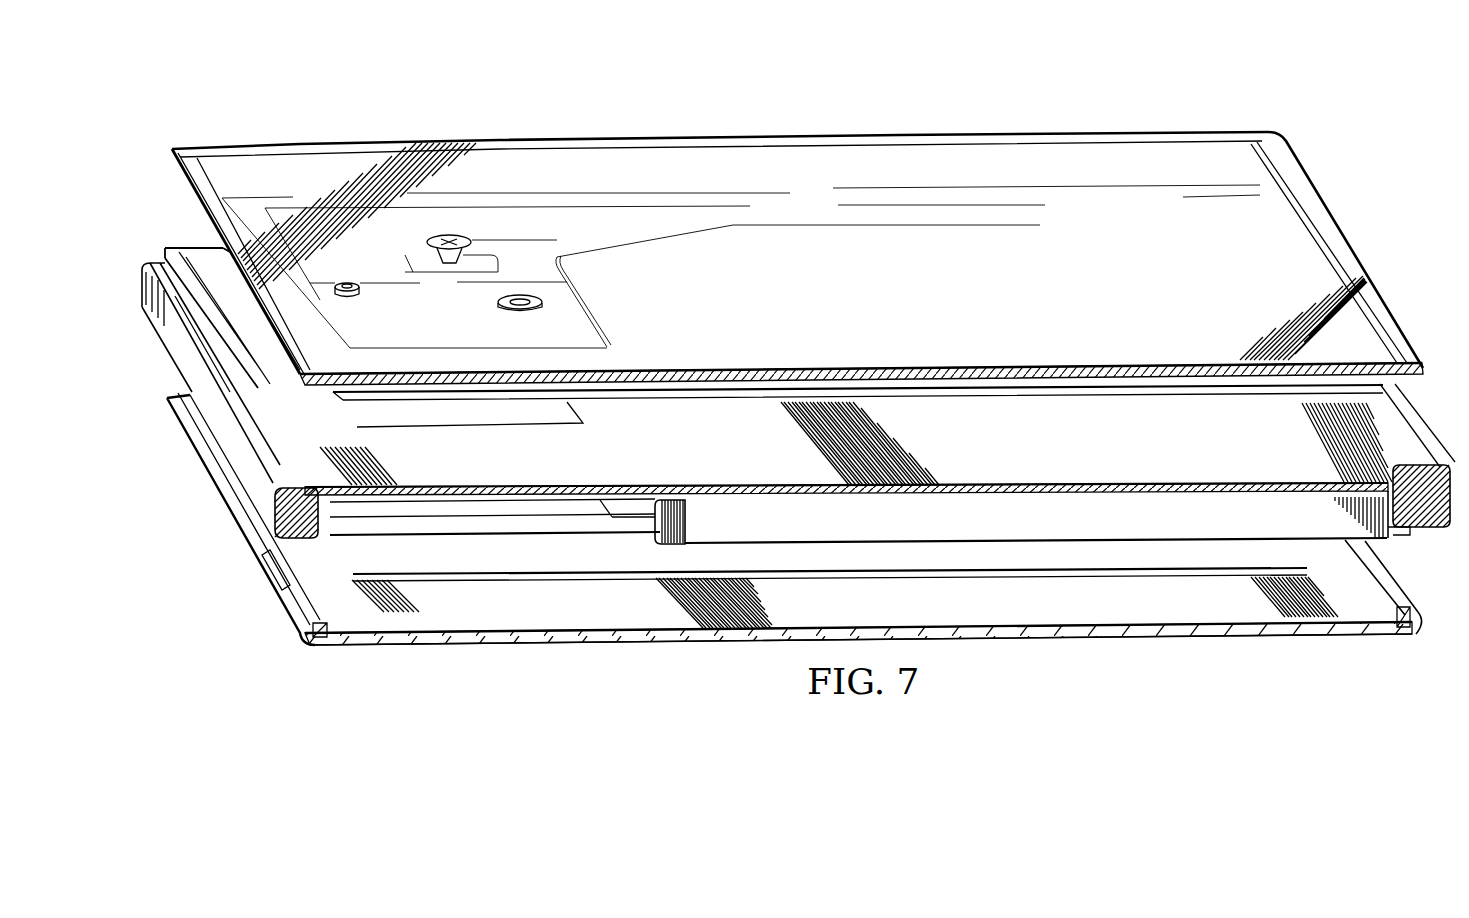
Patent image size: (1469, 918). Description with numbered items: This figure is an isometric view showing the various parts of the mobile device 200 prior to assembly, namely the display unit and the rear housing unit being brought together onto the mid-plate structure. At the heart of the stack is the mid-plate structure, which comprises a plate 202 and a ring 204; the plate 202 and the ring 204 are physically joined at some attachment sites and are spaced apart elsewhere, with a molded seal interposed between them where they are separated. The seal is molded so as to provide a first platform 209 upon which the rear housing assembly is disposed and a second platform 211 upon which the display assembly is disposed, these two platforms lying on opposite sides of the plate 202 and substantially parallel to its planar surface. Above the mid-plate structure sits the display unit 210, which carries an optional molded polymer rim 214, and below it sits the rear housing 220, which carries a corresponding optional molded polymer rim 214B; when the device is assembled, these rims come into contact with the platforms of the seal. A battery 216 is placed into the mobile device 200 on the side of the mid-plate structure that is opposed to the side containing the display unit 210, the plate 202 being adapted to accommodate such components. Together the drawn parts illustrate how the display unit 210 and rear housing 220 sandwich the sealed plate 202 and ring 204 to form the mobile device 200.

The mobile device 200 is at (1090, 72).
The display unit 210 is at (1156, 131).
The molded polymer rim 214 is at (172, 148).
The second platform 211 is at (182, 251).
The ring 204 is at (172, 356).
The plate 202 is at (590, 527).
The battery 216 is at (1190, 497).
The first platform 209 is at (1413, 535).
The rear housing 220 is at (1405, 628).
The molded polymer rim 214B is at (293, 620).